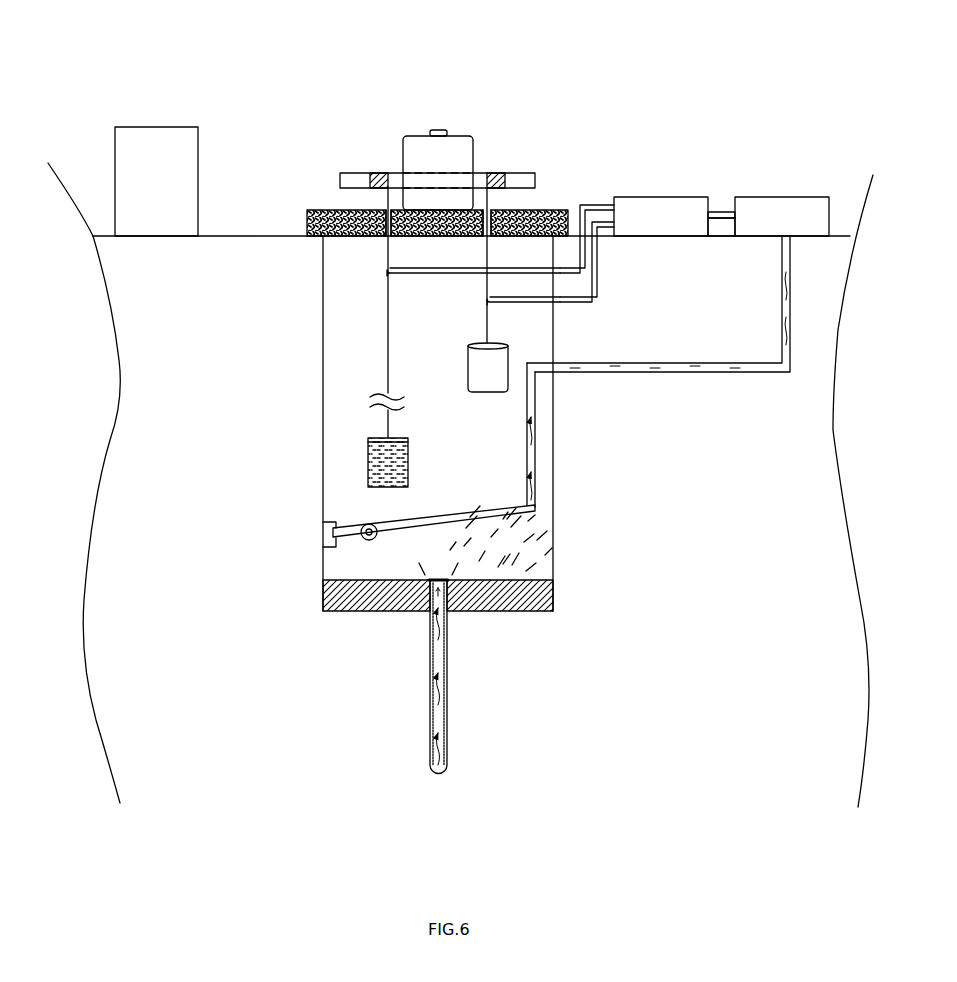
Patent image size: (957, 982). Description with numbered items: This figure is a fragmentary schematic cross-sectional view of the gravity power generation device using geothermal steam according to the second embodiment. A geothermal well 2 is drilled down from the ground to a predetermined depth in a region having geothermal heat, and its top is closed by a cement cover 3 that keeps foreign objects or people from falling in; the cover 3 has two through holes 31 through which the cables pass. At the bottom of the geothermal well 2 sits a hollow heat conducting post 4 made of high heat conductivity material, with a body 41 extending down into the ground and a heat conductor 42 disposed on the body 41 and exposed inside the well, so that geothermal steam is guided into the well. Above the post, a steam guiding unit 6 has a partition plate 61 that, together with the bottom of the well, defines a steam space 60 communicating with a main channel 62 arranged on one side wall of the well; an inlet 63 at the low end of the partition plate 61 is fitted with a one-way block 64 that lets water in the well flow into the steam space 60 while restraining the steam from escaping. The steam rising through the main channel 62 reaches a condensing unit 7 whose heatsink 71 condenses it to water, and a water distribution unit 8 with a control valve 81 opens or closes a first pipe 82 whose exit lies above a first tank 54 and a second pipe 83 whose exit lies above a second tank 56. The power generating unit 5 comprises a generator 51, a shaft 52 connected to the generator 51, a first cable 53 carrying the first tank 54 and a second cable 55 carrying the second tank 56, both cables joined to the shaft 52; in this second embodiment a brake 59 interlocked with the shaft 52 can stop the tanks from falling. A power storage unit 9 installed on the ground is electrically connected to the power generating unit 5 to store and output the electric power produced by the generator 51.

The geothermal well 2 is at (298, 325).
The cover 3 is at (569, 207).
The through holes 31 is at (380, 212).
The hollow heat conducting post 4 is at (438, 505).
The body 41 is at (429, 669).
The heat conductor 42 is at (428, 612).
The power generating unit 5 is at (495, 148).
The generator 51 is at (453, 150).
The shaft 52 is at (378, 186).
The first cable 53 is at (388, 318).
The first tank 54 is at (368, 462).
The second cable 55 is at (487, 305).
The second tank 56 is at (486, 394).
The brake 59 is at (447, 128).
The steam guiding unit 6 is at (511, 467).
The steam space 60 is at (546, 539).
The partition plate 61 is at (545, 505).
The main channel 62 is at (545, 452).
The inlet 63 is at (330, 521).
The block 64 is at (340, 545).
The condensing unit 7 is at (837, 267).
The heatsink 71 is at (813, 196).
The water distribution unit 8 is at (561, 175).
The control valve 81 is at (677, 197).
The first pipe 82 is at (599, 205).
The second pipe 83 is at (597, 262).
The power storage unit 9 is at (177, 97).